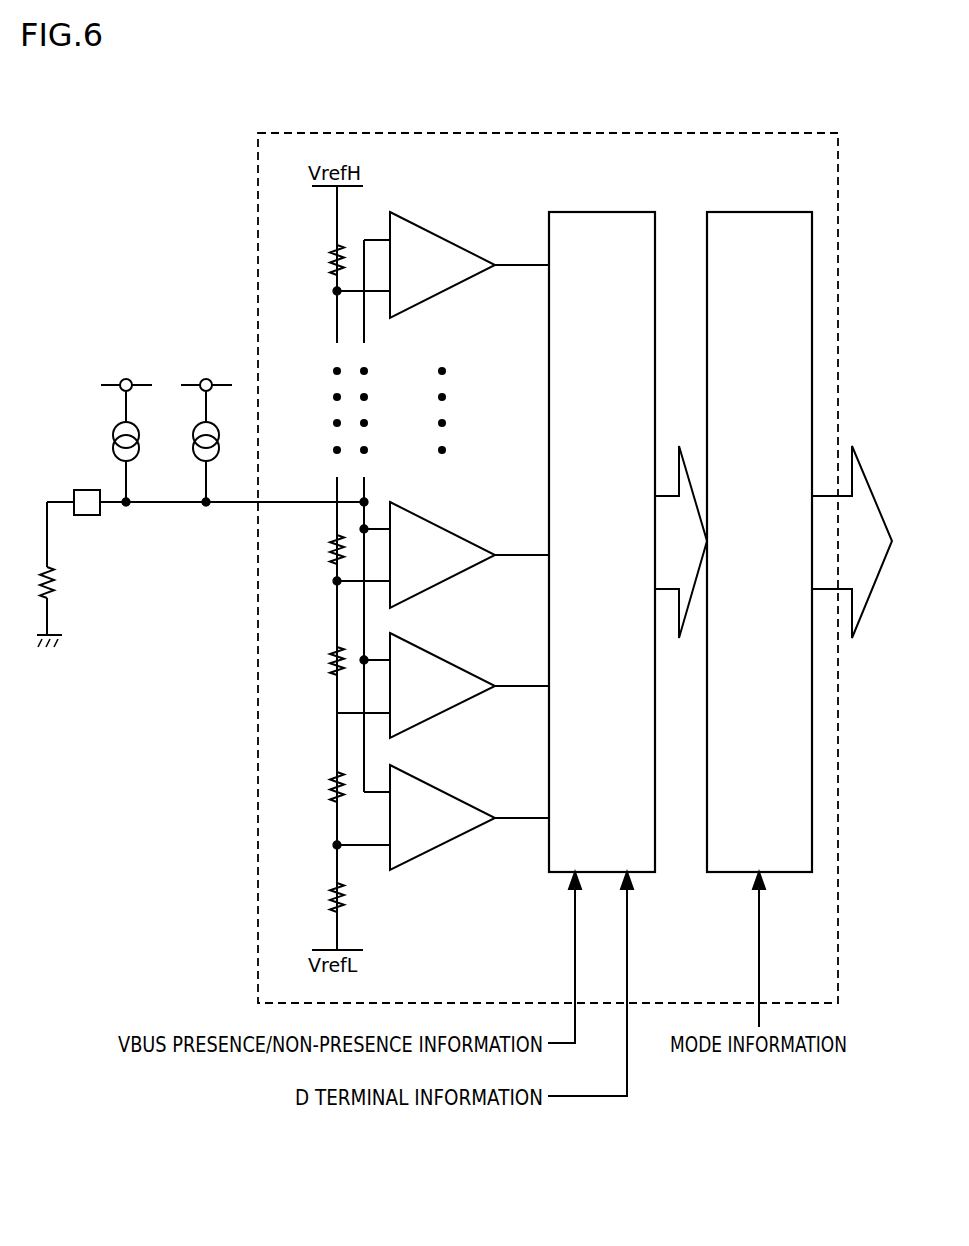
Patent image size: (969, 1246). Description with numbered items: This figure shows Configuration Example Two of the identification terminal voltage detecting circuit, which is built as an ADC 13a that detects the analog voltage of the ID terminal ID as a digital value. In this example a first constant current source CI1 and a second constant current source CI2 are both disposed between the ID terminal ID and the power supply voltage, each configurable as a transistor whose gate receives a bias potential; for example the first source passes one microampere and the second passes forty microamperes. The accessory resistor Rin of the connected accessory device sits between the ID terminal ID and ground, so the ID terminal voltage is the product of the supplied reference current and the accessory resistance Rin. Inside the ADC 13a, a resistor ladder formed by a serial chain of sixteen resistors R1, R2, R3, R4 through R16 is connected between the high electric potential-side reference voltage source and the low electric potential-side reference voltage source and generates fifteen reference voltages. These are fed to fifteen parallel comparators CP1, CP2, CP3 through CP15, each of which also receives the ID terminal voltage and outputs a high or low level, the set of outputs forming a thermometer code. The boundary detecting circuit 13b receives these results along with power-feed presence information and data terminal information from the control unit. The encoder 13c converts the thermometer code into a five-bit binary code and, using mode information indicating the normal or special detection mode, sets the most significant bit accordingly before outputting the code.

The ADC 13a is at (760, 133).
The boundary detecting circuit 13b is at (600, 212).
The encoder 13c is at (757, 212).
The comparator CP1 is at (417, 776).
The comparator CP2 is at (417, 644).
The comparator CP3 is at (417, 513).
The comparator CP15 is at (417, 223).
The resistor R1 is at (319, 897).
The resistor R2 is at (319, 787).
The resistor R3 is at (319, 661).
The resistor R4 is at (319, 549).
The resistor R16 is at (311, 260).
The first constant current source CI1 is at (115, 431).
The second constant current source CI2 is at (194, 431).
The ID terminal ID is at (87, 490).
The accessory resistor Rin is at (64, 574).